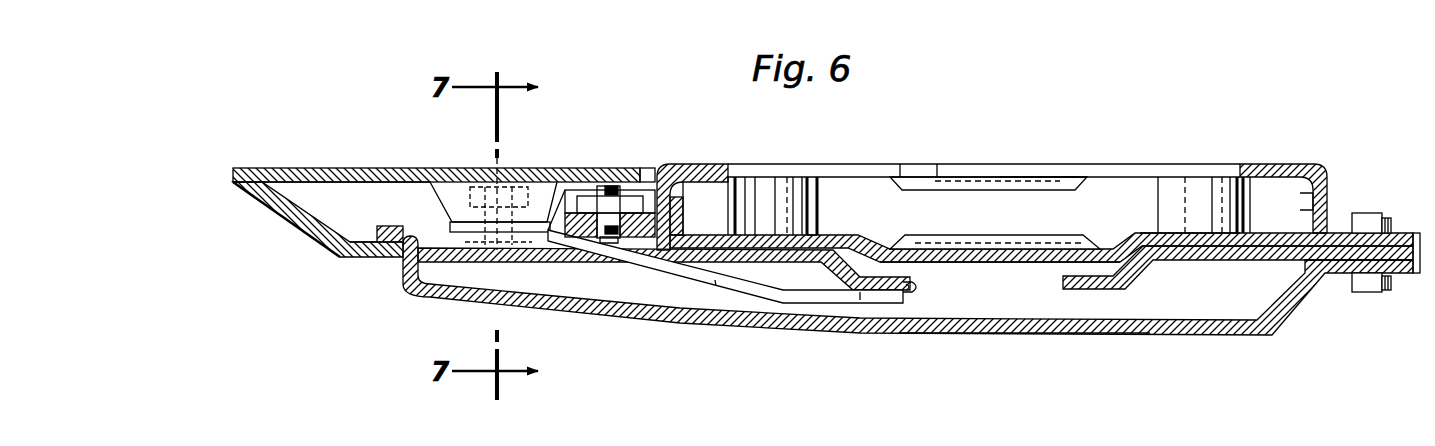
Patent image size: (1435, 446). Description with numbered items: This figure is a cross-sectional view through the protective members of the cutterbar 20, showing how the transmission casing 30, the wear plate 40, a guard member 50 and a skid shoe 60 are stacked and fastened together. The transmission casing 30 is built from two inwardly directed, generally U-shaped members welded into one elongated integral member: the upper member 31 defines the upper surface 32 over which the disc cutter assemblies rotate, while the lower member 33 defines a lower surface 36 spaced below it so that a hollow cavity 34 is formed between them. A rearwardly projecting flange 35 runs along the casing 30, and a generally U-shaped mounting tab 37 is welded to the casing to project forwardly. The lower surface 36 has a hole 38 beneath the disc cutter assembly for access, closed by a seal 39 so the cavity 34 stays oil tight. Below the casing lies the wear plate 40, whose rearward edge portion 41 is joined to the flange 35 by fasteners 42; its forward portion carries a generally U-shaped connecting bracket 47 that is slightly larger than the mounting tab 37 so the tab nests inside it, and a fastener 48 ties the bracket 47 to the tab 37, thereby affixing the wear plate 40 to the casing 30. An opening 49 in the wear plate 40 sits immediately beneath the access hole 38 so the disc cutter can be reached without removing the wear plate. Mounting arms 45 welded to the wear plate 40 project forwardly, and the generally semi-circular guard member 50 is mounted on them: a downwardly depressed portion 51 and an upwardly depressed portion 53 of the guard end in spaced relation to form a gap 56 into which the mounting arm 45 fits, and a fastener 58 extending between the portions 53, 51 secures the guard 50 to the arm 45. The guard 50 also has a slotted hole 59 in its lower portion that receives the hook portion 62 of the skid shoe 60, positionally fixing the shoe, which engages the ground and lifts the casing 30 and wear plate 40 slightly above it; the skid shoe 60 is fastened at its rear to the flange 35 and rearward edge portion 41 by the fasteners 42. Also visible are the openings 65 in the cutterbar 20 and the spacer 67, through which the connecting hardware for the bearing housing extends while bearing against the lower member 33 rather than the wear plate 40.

The cutterbar 20 is at (1213, 127).
The transmission casing 30 is at (1139, 162).
The upper member 31 is at (853, 173).
The upper surface 32 is at (1050, 174).
The lower member 33 is at (1115, 331).
The hollow cavity 34 is at (854, 208).
The rearwardly projecting flange 35 is at (1404, 214).
The lower surface 36 is at (900, 262).
The mounting tab 37 is at (568, 215).
The hole 38 is at (1060, 249).
The seal 39 is at (1030, 263).
The wear-plate 40 is at (1240, 262).
The rearward edge portion 41 is at (1414, 264).
The fasteners 42 is at (1350, 276).
The mounting arms 45 is at (722, 292).
The connecting bracket 47 is at (548, 190).
The fastener 48 is at (606, 186).
The opening 49 is at (921, 288).
The guard member 50 is at (314, 238).
The downwardly depressed portion 51 is at (458, 210).
The upwardly depressed portion 53 is at (420, 215).
The gap 56 is at (437, 216).
The fastener 58 is at (480, 178).
The slotted hole 59 is at (400, 250).
The skid shoe 60 is at (592, 316).
The hook portion 62 is at (393, 227).
The openings 65 is at (768, 158).
The spacer 67 is at (821, 207).